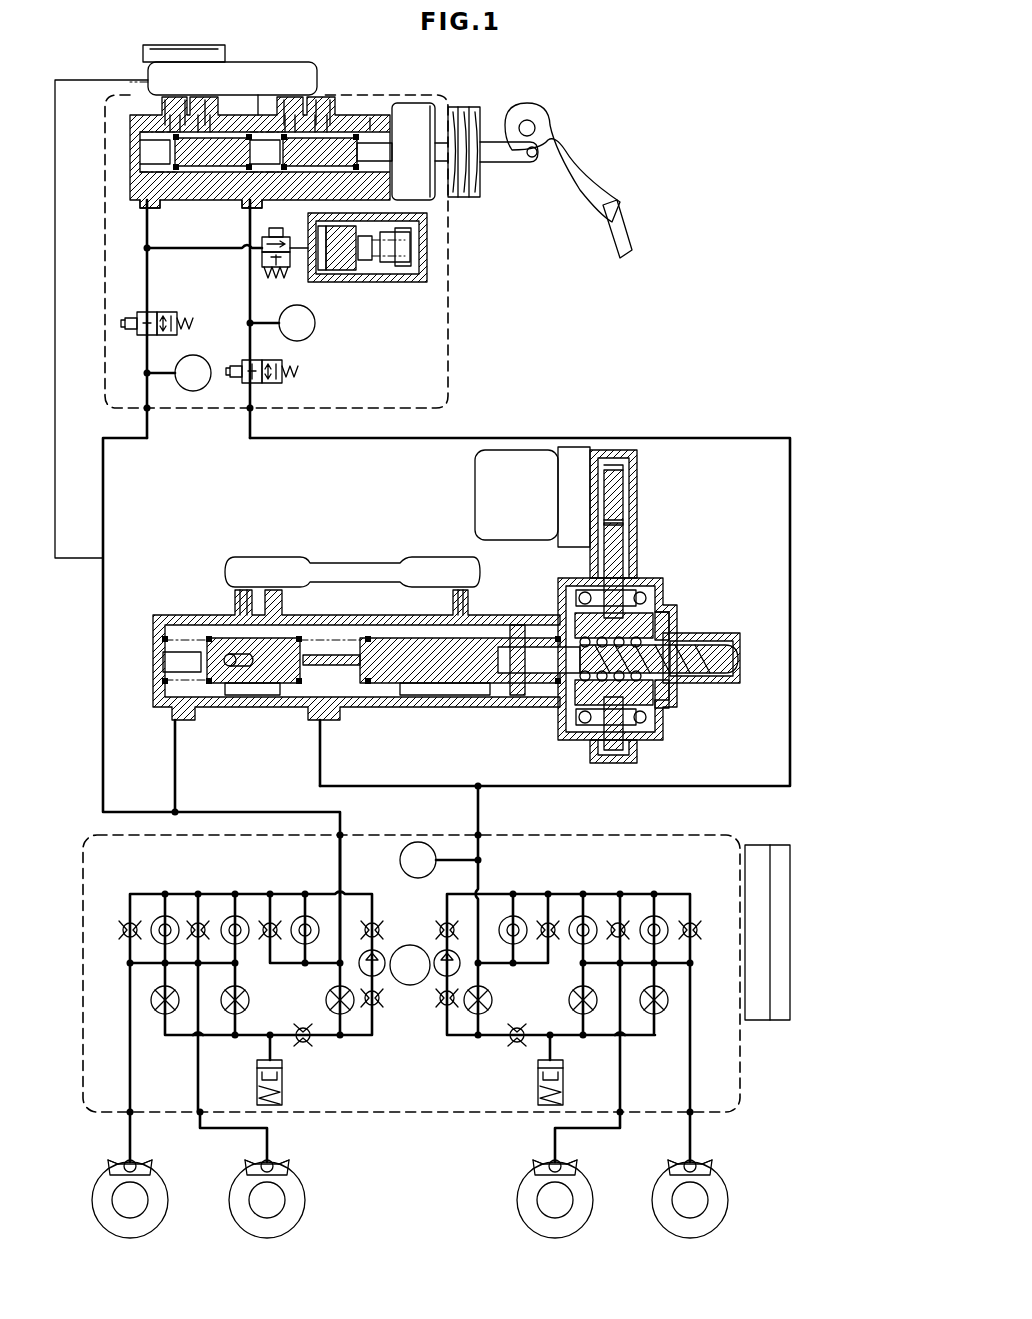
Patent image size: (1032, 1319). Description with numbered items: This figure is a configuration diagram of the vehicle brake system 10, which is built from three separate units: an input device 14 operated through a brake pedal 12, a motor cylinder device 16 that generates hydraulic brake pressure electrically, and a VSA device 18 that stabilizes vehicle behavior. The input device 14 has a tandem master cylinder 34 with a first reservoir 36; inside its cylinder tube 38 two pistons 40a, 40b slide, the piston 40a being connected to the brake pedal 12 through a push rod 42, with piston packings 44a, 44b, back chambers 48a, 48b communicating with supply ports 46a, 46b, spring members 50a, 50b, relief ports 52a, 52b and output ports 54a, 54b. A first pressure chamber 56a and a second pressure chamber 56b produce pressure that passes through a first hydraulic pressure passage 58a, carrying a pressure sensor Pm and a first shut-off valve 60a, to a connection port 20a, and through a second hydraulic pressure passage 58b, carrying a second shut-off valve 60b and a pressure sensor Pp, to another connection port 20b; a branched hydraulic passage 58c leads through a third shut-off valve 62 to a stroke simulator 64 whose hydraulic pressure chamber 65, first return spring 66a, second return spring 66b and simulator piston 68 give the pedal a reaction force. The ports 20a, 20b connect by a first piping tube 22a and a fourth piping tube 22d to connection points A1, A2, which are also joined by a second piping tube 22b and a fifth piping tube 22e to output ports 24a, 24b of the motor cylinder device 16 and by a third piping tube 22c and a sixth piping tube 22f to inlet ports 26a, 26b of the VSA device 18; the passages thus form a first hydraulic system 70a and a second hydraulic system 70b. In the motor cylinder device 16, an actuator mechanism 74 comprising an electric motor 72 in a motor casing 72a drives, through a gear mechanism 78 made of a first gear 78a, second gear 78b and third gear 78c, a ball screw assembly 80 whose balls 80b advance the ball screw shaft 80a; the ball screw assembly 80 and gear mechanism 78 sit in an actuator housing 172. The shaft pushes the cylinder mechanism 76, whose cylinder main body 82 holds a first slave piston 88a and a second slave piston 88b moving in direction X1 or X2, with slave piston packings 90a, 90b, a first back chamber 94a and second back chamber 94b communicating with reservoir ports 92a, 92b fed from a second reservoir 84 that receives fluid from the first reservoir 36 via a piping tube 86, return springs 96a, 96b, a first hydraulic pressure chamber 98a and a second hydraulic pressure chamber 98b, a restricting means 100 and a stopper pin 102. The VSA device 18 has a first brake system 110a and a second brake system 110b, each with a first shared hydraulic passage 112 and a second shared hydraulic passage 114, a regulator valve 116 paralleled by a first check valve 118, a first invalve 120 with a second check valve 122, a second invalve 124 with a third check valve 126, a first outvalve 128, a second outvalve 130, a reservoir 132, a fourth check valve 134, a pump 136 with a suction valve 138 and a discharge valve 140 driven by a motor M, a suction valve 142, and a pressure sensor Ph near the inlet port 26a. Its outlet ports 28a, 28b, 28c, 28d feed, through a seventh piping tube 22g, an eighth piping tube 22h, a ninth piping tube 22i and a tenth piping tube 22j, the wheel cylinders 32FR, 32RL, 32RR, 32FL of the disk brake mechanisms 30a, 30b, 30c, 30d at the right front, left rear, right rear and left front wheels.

The vehicle brake system 10 is at (576, 77).
The brake pedal 12 is at (633, 226).
The input device 14 is at (448, 313).
The motor cylinder device 16 is at (657, 507).
The vehicle behavior stabilizing device 18 is at (648, 822).
The connection port 20a is at (250, 425).
The connection port 20b is at (148, 425).
The first piping tube 22a is at (795, 530).
The second piping tube 22b is at (395, 786).
The third piping tube 22c is at (480, 808).
The fourth piping tube 22d is at (103, 608).
The fifth piping tube 22e is at (175, 762).
The sixth piping tube 22f is at (305, 760).
The seventh piping tube 22g is at (695, 1146).
The eighth piping tube 22h is at (552, 1142).
The ninth piping tube 22i is at (272, 1140).
The tenth piping tube 22j is at (128, 1150).
The output port 24a is at (325, 724).
The output port 24b is at (180, 722).
The inlet port 26a is at (485, 835).
The inlet port 26b is at (345, 825).
The first outlet port 28a is at (695, 1116).
The second outlet port 28b is at (622, 1116).
The third outlet port 28c is at (200, 1116).
The fourth outlet port 28d is at (125, 1115).
The disk brake mechanism 30a is at (735, 1223).
The disk brake mechanism 30b is at (600, 1223).
The disk brake mechanism 30c is at (312, 1223).
The disk brake mechanism 30d is at (175, 1223).
The wheel cylinder 32FR is at (713, 1172).
The wheel cylinder 32RL is at (578, 1172).
The wheel cylinder 32RR is at (290, 1172).
The wheel cylinder 32FL is at (153, 1172).
The tandem master cylinder 34 is at (355, 115).
The first reservoir 36 is at (232, 62).
The cylinder tube 38 is at (372, 118).
The piston 40a is at (340, 120).
The piston 40b is at (190, 120).
The push rod 42 is at (418, 145).
The piston packing 44a is at (240, 170).
The piston packing 44b is at (195, 170).
The supply port 46a is at (322, 122).
The supply port 46b is at (208, 125).
The back chamber 48a is at (345, 172).
The back chamber 48b is at (212, 172).
The spring member 50a is at (260, 95).
The spring member 50b is at (140, 92).
The relief port 52a is at (290, 120).
The relief port 52b is at (175, 115).
The output port 54a is at (258, 205).
The output port 54b is at (135, 203).
The first pressure chamber 56a is at (267, 151).
The second pressure chamber 56b is at (155, 151).
The first hydraulic pressure passage 58a is at (250, 318).
The second hydraulic pressure passage 58b is at (187, 319).
The branched hydraulic passage 58c is at (200, 265).
The first shut-off valve 60a is at (282, 380).
The second shut-off valve 60b is at (160, 312).
The third shut-off valve 62 is at (285, 278).
The stroke simulator 64 is at (436, 229).
The hydraulic pressure chamber 65 is at (326, 275).
The first return spring 66a is at (405, 268).
The second return spring 66b is at (373, 262).
The simulator piston 68 is at (345, 272).
The first hydraulic system 70a is at (541, 414).
The second hydraulic system 70b is at (78, 659).
The electric motor 72 is at (451, 473).
The motor casing 72a is at (475, 492).
The actuator mechanism 74 is at (688, 584).
The cylinder mechanism 76 is at (435, 690).
The gear mechanism 78 is at (640, 533).
The first gear 78a is at (615, 468).
The second gear 78b is at (625, 553).
The third gear 78c is at (627, 755).
The ball screw assembly 80 is at (740, 640).
The ball screw shaft 80a is at (690, 690).
The balls 80b is at (670, 628).
The cylinder main body 82 is at (520, 625).
The second reservoir 84 is at (448, 557).
The piping tube 86 is at (55, 320).
The first slave piston 88a is at (478, 685).
The second slave piston 88b is at (268, 685).
The slave piston packing 90a is at (305, 698).
The slave piston packing 90b is at (215, 688).
The reservoir port 92a is at (470, 590).
The reservoir port 92b is at (262, 590).
The first back chamber 94a is at (452, 698).
The second back chamber 94b is at (252, 698).
The first return spring 96a is at (368, 688).
The second return spring 96b is at (175, 615).
The first hydraulic pressure chamber 98a is at (333, 666).
The second hydraulic pressure chamber 98b is at (185, 660).
The restricting means 100 is at (350, 652).
The stopper pin 102 is at (228, 655).
The first brake system 110a is at (695, 886).
The second brake system 110b is at (137, 880).
The first shared hydraulic passage 112 is at (200, 892).
The second shared hydraulic passage 114 is at (217, 1040).
The regulator valve 116 is at (307, 915).
The first check valve 118 is at (270, 920).
The first invalve 120 is at (163, 915).
The second check valve 122 is at (125, 920).
The second invalve 124 is at (235, 915).
The third check valve 126 is at (195, 920).
The first outvalve 128 is at (160, 1015).
The second outvalve 130 is at (250, 996).
The reservoir 132 is at (282, 1100).
The fourth check valve 134 is at (307, 1045).
The pump 136 is at (383, 975).
The suction valve 138 is at (382, 1005).
The discharge valve 140 is at (383, 928).
The suction valve 142 is at (345, 1015).
The actuator housing 172 is at (675, 728).
The connection point A1 is at (479, 797).
The connection point A2 is at (190, 801).
The motor M is at (410, 965).
The pressure sensor Ph is at (441, 860).
The pressure sensor Pm is at (281, 323).
The pressure sensor Pp is at (178, 373).
The arrow direction X1 is at (371, 548).
The arrow direction X2 is at (404, 543).